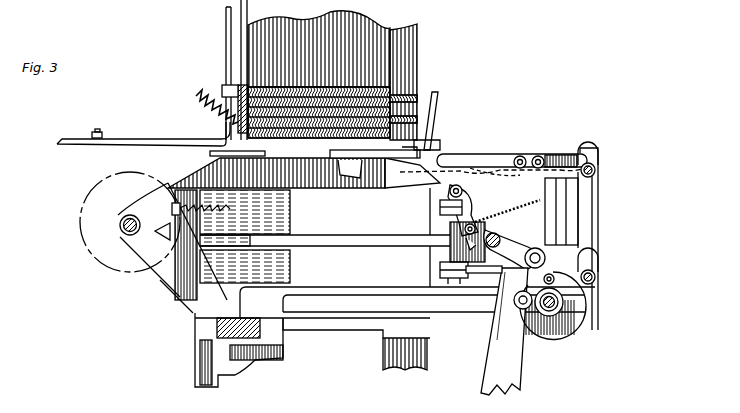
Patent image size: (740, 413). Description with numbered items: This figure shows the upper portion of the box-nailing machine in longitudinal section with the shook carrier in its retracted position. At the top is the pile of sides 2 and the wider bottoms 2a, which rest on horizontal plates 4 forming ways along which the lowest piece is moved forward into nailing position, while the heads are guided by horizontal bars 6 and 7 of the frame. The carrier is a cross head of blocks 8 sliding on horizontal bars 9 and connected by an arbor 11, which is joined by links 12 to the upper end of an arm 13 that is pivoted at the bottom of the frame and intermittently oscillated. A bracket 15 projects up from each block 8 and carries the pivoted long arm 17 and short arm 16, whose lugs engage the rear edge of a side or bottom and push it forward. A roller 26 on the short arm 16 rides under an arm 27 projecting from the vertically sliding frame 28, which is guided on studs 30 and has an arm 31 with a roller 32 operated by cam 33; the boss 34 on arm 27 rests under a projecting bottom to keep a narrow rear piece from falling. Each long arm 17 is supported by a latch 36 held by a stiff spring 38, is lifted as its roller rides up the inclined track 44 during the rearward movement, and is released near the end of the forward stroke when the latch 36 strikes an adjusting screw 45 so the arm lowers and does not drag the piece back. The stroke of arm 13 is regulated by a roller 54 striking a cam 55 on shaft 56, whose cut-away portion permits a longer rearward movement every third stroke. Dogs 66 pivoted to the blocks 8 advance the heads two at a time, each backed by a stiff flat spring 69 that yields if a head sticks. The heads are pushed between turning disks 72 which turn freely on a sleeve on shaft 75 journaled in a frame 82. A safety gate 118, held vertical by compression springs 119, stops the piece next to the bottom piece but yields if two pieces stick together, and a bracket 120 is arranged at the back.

The sides 2 is at (378, 98).
The bottoms 2a is at (400, 119).
The horizontal plates 4 is at (212, 153).
The horizontal bars 6 is at (250, 172).
The horizontal bars 7 is at (330, 288).
The blocks 8 is at (458, 248).
The horizontal bars 9 is at (309, 226).
The arbor 11 is at (500, 305).
The links 12 is at (514, 250).
The arm 13 is at (504, 331).
The bracket 15 is at (564, 211).
The short arm 16 is at (468, 157).
The long arm 17 is at (538, 156).
The roller 26 is at (450, 191).
The arm 27 is at (490, 166).
The vertically sliding frame 28 is at (590, 210).
The studs 30 is at (596, 168).
The arm 31 is at (602, 293).
The roller 32 is at (560, 302).
The cam 33 is at (533, 325).
The boss 34 is at (434, 143).
The latch 36 is at (455, 230).
The spring 38 is at (512, 208).
The track 44 is at (352, 178).
The adjusting screws 45 is at (205, 205).
The roller 54 is at (503, 310).
The cam 55 is at (560, 322).
The shaft 56 is at (583, 332).
The dogs 66 is at (440, 208).
The flat spring 69 is at (490, 274).
The turning disks 72 is at (130, 222).
The shaft 75 is at (122, 230).
The frame 82 is at (132, 252).
The safety gate 118 is at (226, 83).
The compression springs 119 is at (204, 111).
The bracket 120 is at (437, 106).